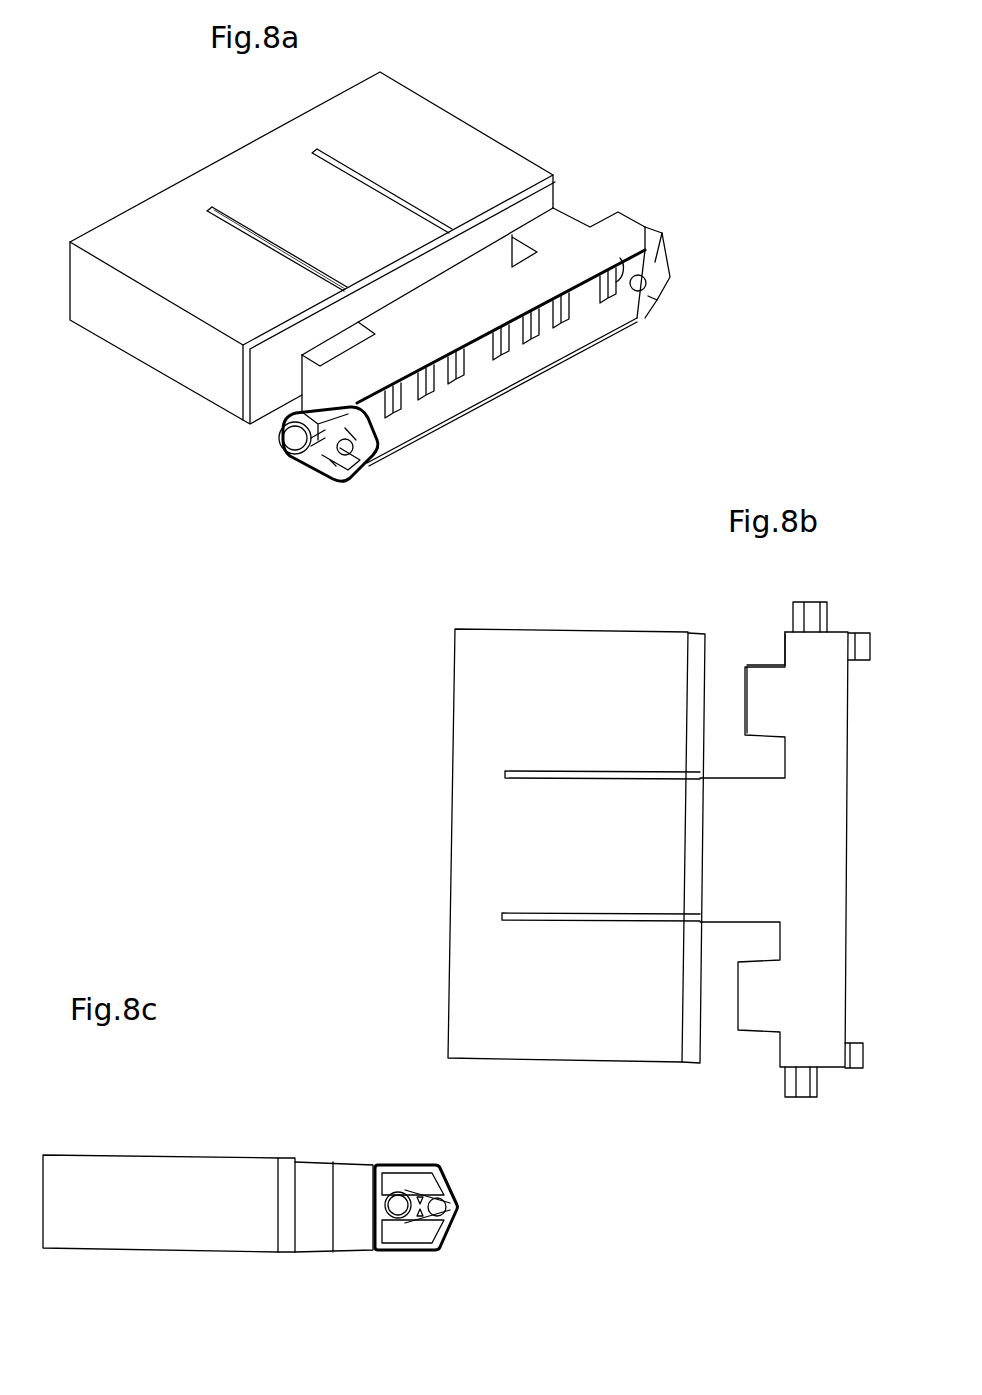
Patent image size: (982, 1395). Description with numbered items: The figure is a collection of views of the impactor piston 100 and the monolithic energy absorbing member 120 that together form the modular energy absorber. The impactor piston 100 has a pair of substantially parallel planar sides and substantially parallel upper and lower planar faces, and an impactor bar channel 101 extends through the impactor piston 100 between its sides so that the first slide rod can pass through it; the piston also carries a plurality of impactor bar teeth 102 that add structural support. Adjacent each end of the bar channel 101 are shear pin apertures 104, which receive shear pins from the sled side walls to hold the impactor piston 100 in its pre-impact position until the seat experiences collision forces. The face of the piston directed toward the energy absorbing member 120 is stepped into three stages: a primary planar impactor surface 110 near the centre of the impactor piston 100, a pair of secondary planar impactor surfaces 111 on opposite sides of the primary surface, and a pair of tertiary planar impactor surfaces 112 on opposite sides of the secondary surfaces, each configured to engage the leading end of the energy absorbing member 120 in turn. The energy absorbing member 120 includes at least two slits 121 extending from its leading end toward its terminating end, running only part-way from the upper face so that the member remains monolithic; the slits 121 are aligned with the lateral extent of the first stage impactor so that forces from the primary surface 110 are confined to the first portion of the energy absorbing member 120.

In FIG. 8A, the impactor piston 100 is at (359, 326).
In FIG. 8B, the impactor piston 100 is at (635, 866).
In FIG. 8C, the impactor piston 100 is at (412, 1171).
In FIG. 8A, the impactor bar channel 101 is at (293, 451).
In FIG. 8B, the impactor bar channel 101 is at (800, 1100).
In FIG. 8C, the impactor bar channel 101 is at (405, 1190).
In FIG. 8A, the impactor bar teeth 102 is at (498, 366).
In FIG. 8A, the shear pin apertures 104 is at (341, 468).
In FIG. 8B, the shear pin apertures 104 is at (850, 1072).
In FIG. 8C, the shear pin apertures 104 is at (452, 1207).
In FIG. 8A, the primary planar impactor surface 110 is at (343, 283).
In FIG. 8B, the primary planar impactor surface 110 is at (695, 871).
In FIG. 8A, the secondary planar impactor surfaces 111 is at (290, 358).
In FIG. 8B, the secondary planar impactor surfaces 111 is at (742, 688).
In FIG. 8A, the tertiary planar impactor surfaces 112 is at (300, 380).
In FIG. 8B, the tertiary planar impactor surfaces 112 is at (783, 648).
In FIG. 8A, the energy absorbing member 120 is at (311, 246).
In FIG. 8B, the energy absorbing member 120 is at (553, 627).
In FIG. 8C, the energy absorbing member 120 is at (113, 1152).
In FIG. 8B, the slits 121 is at (519, 767).